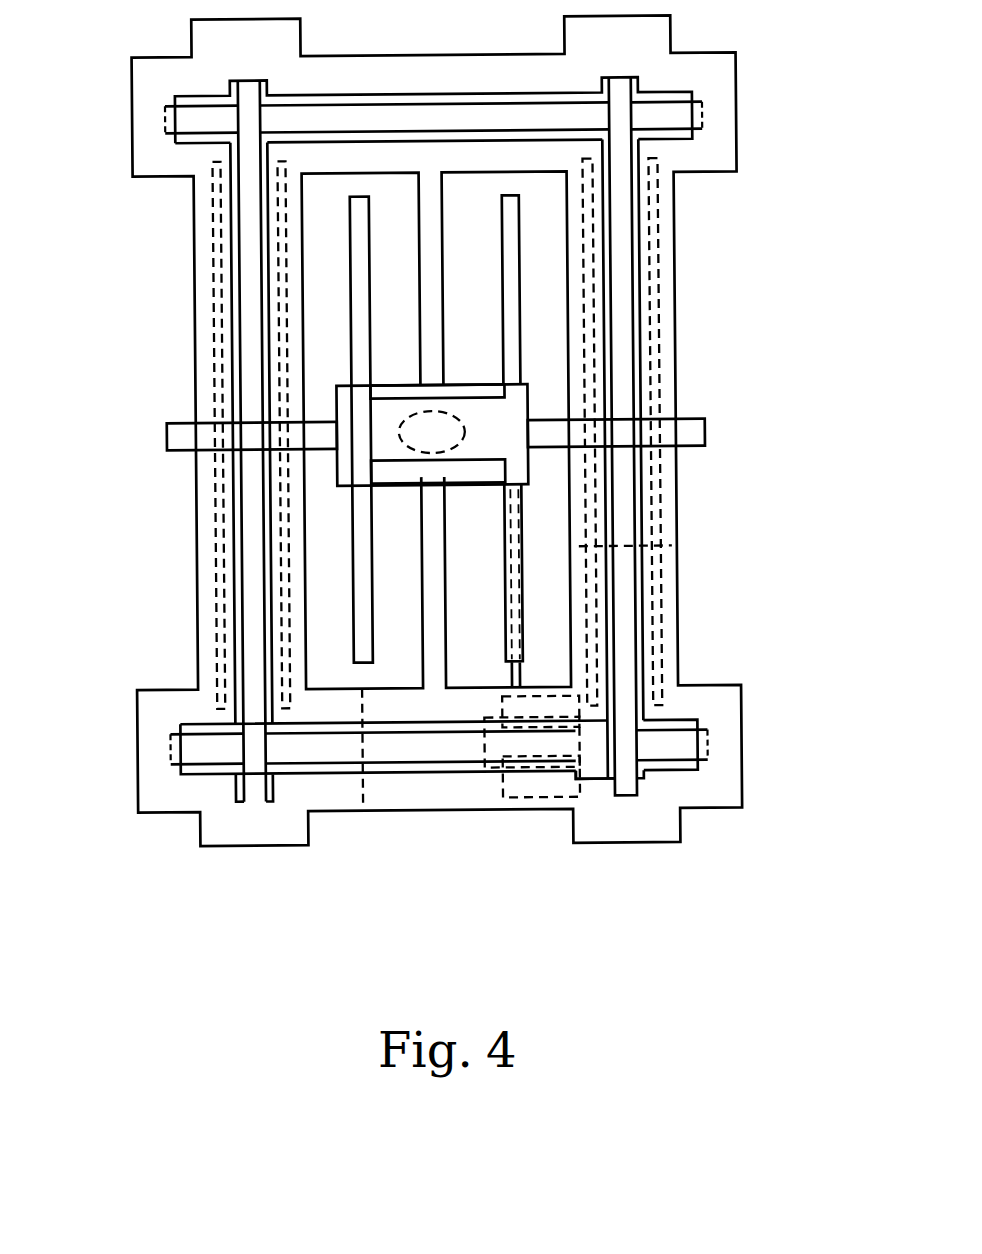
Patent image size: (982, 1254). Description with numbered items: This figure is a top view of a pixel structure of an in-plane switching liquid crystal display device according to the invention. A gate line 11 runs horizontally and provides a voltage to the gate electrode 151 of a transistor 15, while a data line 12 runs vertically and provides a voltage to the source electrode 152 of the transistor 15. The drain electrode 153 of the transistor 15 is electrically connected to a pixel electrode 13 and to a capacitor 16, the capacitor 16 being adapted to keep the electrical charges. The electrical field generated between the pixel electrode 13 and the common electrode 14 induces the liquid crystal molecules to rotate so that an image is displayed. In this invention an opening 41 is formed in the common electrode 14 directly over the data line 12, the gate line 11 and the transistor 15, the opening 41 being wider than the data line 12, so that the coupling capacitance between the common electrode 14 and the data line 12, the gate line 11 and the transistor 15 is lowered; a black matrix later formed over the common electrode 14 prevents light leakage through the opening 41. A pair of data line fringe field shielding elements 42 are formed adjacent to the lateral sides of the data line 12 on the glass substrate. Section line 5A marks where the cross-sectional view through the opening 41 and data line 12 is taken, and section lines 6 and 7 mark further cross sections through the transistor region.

The gate line 11 is at (384, 426).
The data line 12 is at (515, 505).
The pixel electrode 13 is at (426, 470).
The common electrode 14 is at (488, 431).
The transistor 15 is at (582, 849).
The capacitor 16 is at (543, 442).
The opening 41 is at (452, 433).
The data line fringe field shielding element 42 is at (635, 574).
The gate electrode 151 is at (563, 807).
The source electrode 152 is at (541, 847).
The drain electrode 153 is at (655, 679).
The section line 6 is at (350, 716).
The section line 7 is at (497, 714).
The section line 5A— 5A is at (584, 562).